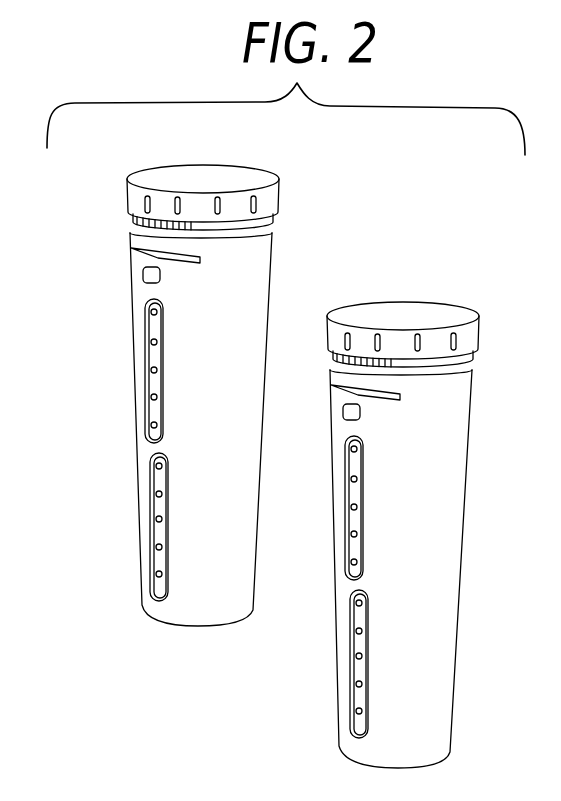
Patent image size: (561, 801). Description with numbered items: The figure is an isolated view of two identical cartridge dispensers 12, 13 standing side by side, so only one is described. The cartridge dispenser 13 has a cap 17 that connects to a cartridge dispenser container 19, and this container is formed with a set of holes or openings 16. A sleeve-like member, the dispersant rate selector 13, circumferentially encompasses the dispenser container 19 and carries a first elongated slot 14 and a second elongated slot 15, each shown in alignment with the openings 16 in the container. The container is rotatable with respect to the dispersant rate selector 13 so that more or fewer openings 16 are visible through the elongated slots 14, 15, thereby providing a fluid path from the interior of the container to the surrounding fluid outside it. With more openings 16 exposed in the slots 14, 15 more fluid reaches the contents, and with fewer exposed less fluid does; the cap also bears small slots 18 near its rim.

The cartridge dispenser 12 is at (435, 567).
The cartridge dispenser 13 is at (242, 270).
The first elongated slot 14 is at (147, 388).
The second elongated slot 15 is at (152, 527).
The openings 16 is at (147, 323).
The cap 17 is at (135, 208).
The cap vent slots 18 is at (180, 208).
The cartridge dispenser container 19 is at (245, 230).